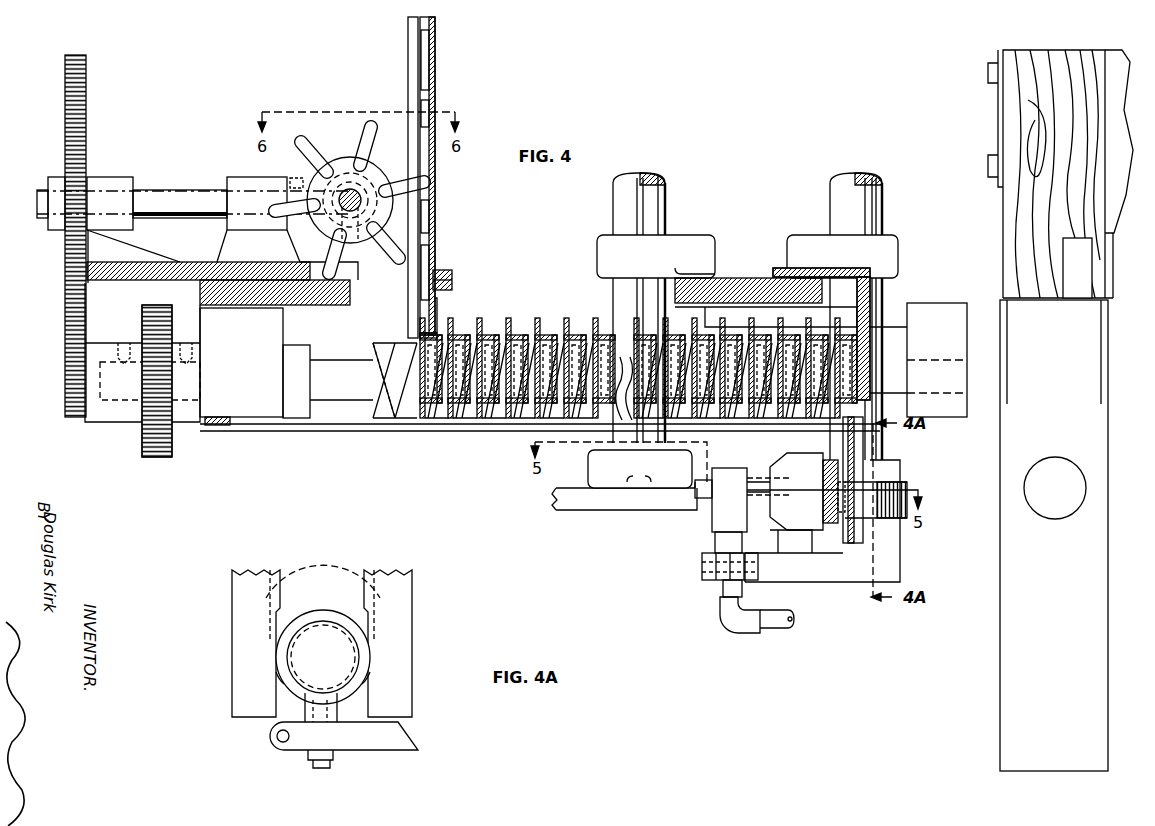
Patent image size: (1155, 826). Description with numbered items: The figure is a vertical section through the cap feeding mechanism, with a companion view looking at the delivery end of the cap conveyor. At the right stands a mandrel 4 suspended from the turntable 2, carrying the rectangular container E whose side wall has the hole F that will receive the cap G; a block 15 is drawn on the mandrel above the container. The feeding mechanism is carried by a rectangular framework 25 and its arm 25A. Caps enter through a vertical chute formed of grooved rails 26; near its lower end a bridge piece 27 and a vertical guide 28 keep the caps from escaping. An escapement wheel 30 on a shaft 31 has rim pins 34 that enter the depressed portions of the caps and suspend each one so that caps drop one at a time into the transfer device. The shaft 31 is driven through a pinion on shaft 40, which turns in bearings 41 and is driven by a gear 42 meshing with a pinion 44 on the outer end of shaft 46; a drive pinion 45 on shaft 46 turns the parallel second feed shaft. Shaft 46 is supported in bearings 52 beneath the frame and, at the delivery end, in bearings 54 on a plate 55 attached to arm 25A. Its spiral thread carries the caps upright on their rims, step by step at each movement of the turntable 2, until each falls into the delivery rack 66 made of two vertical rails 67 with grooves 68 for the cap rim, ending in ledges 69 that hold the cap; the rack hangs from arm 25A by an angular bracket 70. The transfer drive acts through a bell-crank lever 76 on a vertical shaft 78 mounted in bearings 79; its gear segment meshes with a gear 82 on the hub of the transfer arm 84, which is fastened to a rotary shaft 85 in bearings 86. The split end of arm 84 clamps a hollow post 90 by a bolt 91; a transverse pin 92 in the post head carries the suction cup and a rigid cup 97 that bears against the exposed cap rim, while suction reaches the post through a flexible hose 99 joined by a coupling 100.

In FIG. 4, the turntable 2 is at (1110, 55).
In FIG. 4, the mandrel 4 is at (1020, 212).
In FIG. 4, the block 15 is at (1077, 253).
In FIG. 4, the rectangular framework 25 is at (185, 268).
In FIG. 4, the arm 25A is at (740, 287).
In FIG. 4, the channels or rails 26 is at (415, 56).
In FIG. 4, the bridge piece 27 is at (452, 287).
In FIG. 4, the vertical guide 28 is at (435, 215).
In FIG. 4, the escapement wheel 30 is at (377, 182).
In FIG. 4, the shaft 31 is at (360, 200).
In FIG. 4, the pins 34 is at (325, 173).
In FIG. 4, the shaft 40 is at (174, 195).
In FIG. 4, the bearings 41 is at (115, 188).
In FIG. 4, the gear 42 is at (78, 148).
In FIG. 4, the pinion 44 is at (70, 397).
In FIG. 4, the drive pinion 45 is at (163, 433).
In FIG. 4, the shaft 46 is at (343, 390).
In FIG. 4, the bearings 52 is at (250, 410).
In FIG. 4, the bearings 54 is at (943, 332).
In FIG. 4, the plate 55 is at (880, 315).
In FIG. 4, the delivery arm or rack 66 is at (847, 550).
In FIG. 4A, the vertical rails 67 is at (235, 643).
In FIG. 4A, the grooves 68 is at (323, 581).
In FIG. 4A, the ledges 69 is at (280, 680).
In FIG. 4, the angular bracket 70 is at (850, 268).
In FIG. 4, the bell-crank lever 76 is at (590, 504).
In FIG. 4, the vertical shaft 78 is at (652, 208).
In FIG. 4, the bearings 79 is at (693, 250).
In FIG. 4, the gear 82 is at (903, 483).
In FIG. 4, the transfer arm 84 is at (858, 573).
In FIG. 4A, the transfer arm 84 is at (400, 742).
In FIG. 4, the rotary shaft 85 is at (872, 198).
In FIG. 4, the bearings 86 is at (887, 256).
In FIG. 4, the hollow post 90 is at (722, 591).
In FIG. 4A, the hollow post 90 is at (300, 714).
In FIG. 4, the bolt 91 is at (703, 576).
In FIG. 4, the transverse pin 92 is at (705, 500).
In FIG. 4, the rigid cup 97 is at (797, 462).
In FIG. 4, the flexible hose 99 is at (772, 626).
In FIG. 4, the coupling 100 is at (733, 621).
In FIG. 4, the container E is at (1005, 626).
In FIG. 4, the hole F is at (1080, 498).
In FIG. 4, the cap G is at (565, 320).
In FIG. 4A, the cap G is at (345, 645).